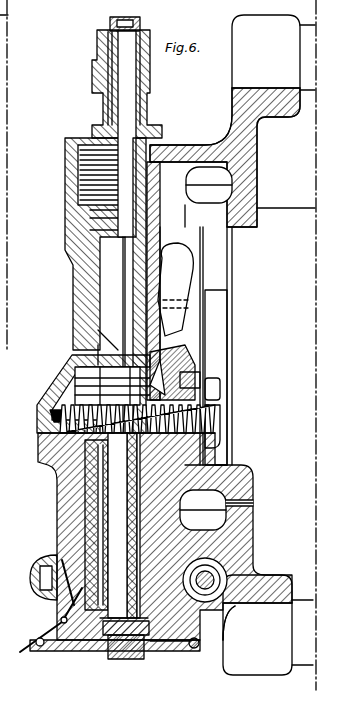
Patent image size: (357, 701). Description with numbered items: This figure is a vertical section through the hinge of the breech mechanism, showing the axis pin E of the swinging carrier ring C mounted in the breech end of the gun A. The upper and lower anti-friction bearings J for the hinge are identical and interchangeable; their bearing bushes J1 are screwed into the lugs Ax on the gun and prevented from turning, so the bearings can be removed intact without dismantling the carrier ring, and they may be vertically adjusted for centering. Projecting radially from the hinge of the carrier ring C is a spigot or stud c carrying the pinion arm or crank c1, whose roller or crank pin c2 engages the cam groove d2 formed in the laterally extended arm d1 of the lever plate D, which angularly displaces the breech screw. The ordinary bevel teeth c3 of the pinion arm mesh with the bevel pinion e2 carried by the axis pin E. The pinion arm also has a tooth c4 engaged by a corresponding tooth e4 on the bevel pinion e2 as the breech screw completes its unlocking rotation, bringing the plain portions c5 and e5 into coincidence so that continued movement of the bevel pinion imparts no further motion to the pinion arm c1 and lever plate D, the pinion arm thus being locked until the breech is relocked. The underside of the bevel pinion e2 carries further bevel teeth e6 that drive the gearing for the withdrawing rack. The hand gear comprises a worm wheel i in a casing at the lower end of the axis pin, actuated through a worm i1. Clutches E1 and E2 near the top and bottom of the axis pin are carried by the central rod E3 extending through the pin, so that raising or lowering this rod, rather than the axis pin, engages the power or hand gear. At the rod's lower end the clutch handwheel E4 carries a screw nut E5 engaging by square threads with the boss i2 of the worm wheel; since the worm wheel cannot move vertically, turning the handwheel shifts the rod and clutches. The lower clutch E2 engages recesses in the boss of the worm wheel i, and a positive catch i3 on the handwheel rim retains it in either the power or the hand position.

The breech end of the gun A is at (169, 345).
The lugs on the gun Ax is at (75, 163).
The upper clutch E1 is at (107, 62).
The central rod E3 is at (137, 90).
The axis pin E is at (143, 105).
The swinging carrier ring C is at (244, 268).
The spigot or stud c is at (221, 523).
The pinion arm or crank c1 is at (183, 288).
The roller or crank pin c2 is at (213, 390).
The bevel teeth c3 is at (171, 365).
The tooth c4 is at (176, 349).
The plain portion c5 is at (178, 345).
The lever plate D is at (214, 311).
The laterally extended arm d1 is at (210, 428).
The cam groove d2 is at (205, 378).
The anti-friction bearings J is at (190, 212).
The bearing bushes J1 is at (206, 353).
The bevel pinion e2 is at (105, 372).
The tooth e4 is at (100, 330).
The plain portion e5 is at (98, 345).
The bevel teeth e6 is at (80, 395).
The worm wheel i is at (245, 535).
The worm i1 is at (253, 556).
The boss of the worm wheel i2 is at (122, 652).
The positive catch i3 is at (70, 575).
The lower clutch E2 is at (104, 629).
The clutch handwheel E4 is at (193, 648).
The screw nut E5 is at (160, 652).